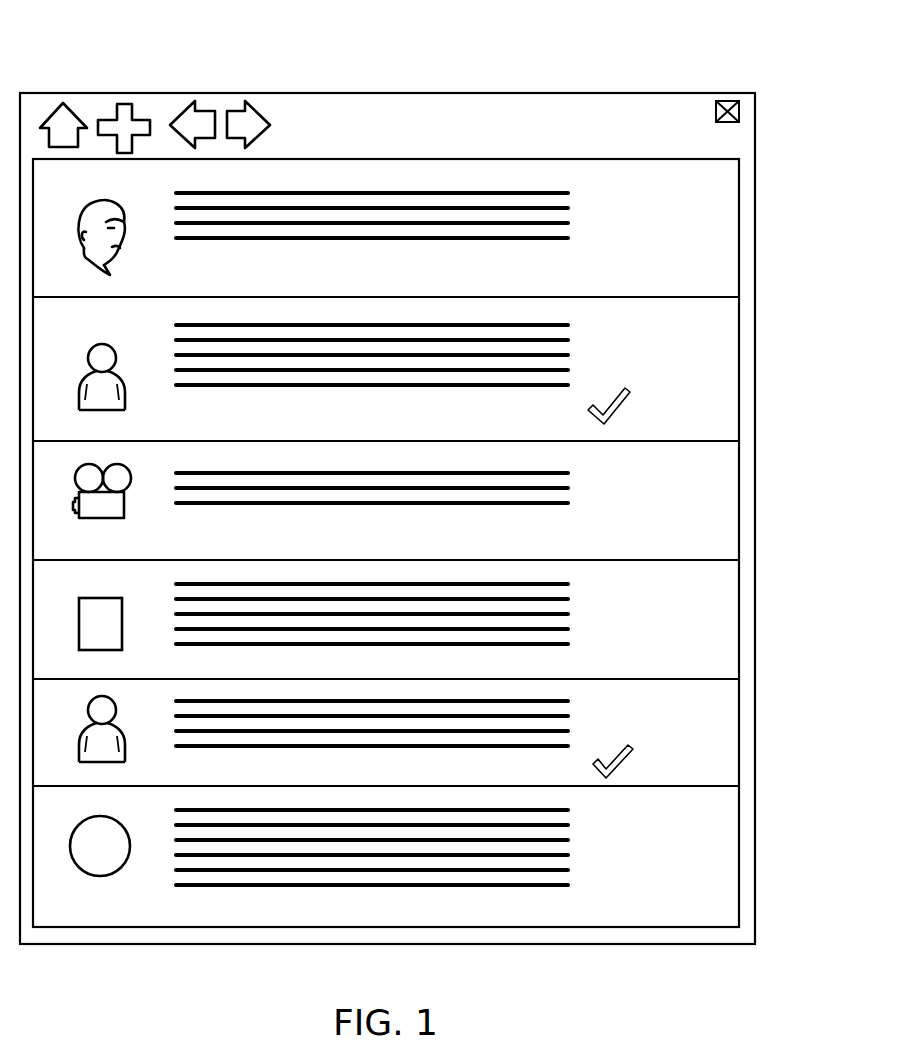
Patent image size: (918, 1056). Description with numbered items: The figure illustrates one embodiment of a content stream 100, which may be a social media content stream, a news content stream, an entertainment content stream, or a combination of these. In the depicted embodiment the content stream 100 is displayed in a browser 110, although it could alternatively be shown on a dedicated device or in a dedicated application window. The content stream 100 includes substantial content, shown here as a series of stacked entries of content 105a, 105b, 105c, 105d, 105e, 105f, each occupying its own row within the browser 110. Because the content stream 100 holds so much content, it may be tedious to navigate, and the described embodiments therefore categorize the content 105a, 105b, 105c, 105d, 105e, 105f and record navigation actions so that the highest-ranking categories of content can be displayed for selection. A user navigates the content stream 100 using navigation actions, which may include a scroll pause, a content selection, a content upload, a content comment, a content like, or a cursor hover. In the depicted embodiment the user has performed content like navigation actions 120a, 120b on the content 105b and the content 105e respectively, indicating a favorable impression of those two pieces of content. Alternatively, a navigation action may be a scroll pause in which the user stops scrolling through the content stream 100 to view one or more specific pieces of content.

The content stream 100 is at (72, 59).
The browser 110 is at (299, 93).
The content 105a is at (393, 234).
The content 105b is at (393, 367).
The content 105c is at (391, 492).
The content 105d is at (394, 617).
The content 105e is at (394, 729).
The content 105f is at (390, 847).
The navigation action 120a is at (604, 420).
The navigation action 120b is at (606, 774).